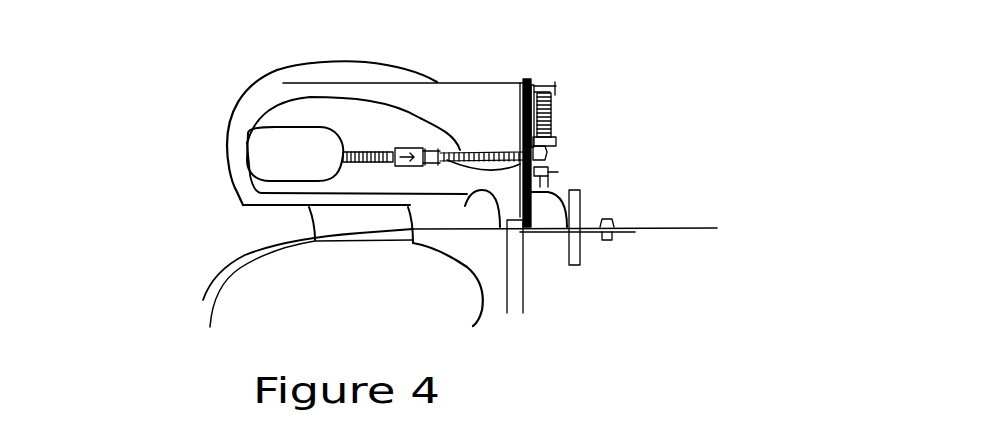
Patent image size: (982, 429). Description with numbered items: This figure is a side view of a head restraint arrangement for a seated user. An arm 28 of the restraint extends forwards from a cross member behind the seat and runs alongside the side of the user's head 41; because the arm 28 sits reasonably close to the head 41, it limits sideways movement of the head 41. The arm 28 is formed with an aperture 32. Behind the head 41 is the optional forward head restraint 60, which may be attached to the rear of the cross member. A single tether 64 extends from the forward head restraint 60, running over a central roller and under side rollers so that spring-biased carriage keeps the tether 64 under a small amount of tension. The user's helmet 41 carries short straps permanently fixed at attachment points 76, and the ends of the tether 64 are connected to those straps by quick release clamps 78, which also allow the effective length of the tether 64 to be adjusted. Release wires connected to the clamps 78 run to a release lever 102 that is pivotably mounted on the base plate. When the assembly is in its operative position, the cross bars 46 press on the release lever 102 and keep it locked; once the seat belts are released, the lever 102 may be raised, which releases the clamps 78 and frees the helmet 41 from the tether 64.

The arm 28 is at (230, 139).
The user's head 41 is at (375, 72).
The aperture 32 is at (377, 123).
The forward head restraint 60 is at (613, 103).
The tether 64 is at (555, 120).
The attachment point 76 is at (357, 165).
The quick release clamp 78 is at (428, 171).
The release lever 102 is at (552, 192).
The cross bar 46 is at (637, 227).